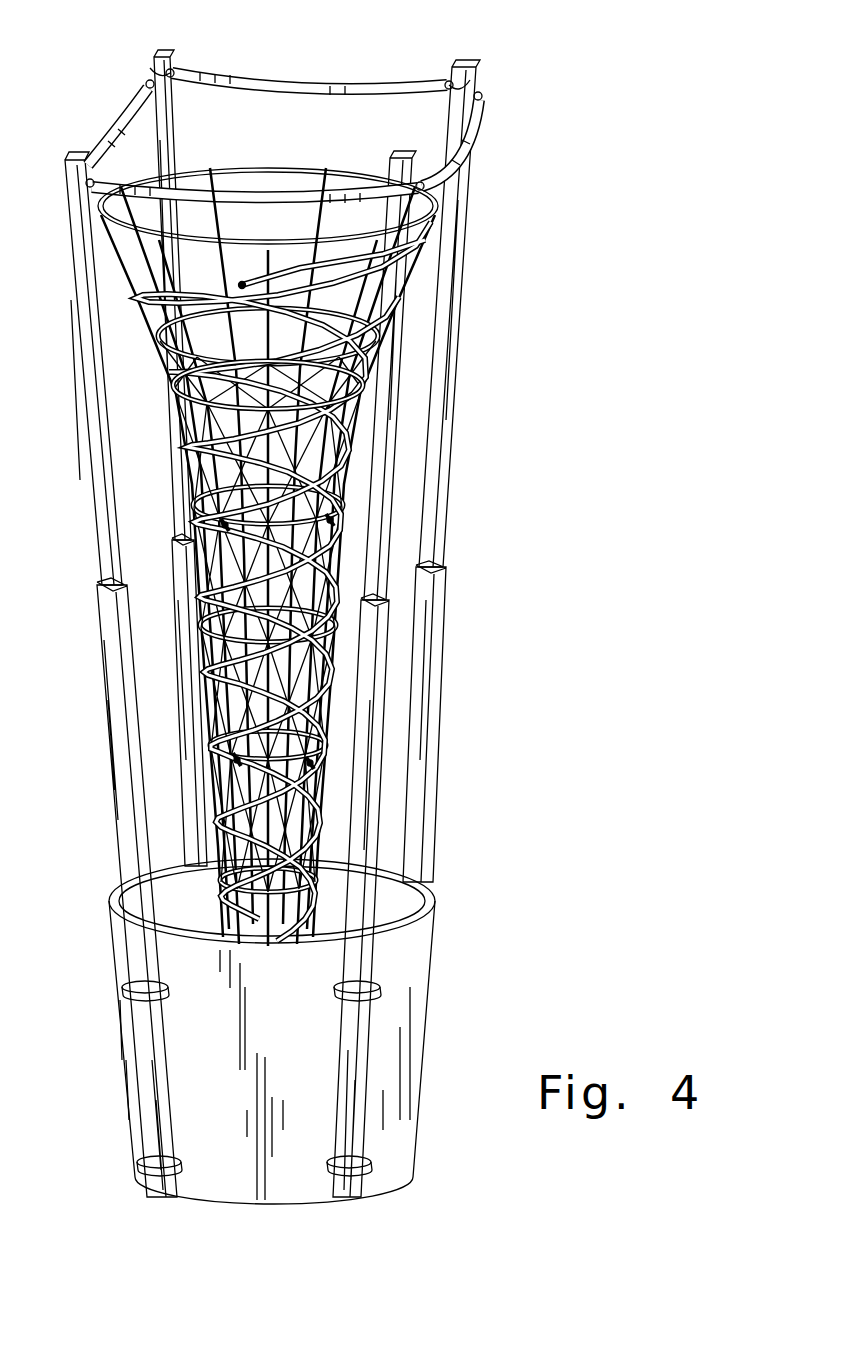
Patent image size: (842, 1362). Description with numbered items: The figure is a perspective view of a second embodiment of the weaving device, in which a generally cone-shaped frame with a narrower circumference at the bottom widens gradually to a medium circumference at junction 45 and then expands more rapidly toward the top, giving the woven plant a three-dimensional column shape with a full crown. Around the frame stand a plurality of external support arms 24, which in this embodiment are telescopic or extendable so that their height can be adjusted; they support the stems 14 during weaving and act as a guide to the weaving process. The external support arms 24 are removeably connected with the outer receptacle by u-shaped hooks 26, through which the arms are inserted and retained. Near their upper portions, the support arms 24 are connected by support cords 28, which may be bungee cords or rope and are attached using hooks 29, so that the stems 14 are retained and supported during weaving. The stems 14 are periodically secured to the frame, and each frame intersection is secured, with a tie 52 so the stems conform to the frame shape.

The stems 14 is at (172, 483).
The external support arms 24 is at (387, 620).
The u-shaped hooks 26 is at (368, 1163).
The support cords 28 is at (475, 143).
The hooks 29 is at (447, 76).
The junction 45 is at (360, 390).
The tie 52 is at (312, 762).